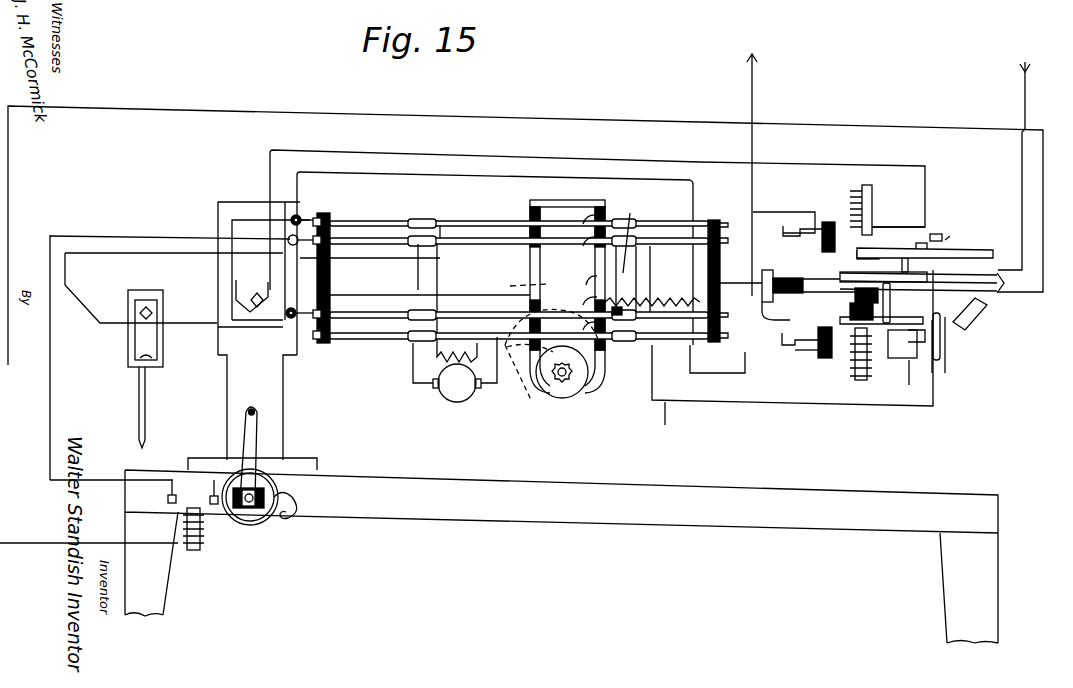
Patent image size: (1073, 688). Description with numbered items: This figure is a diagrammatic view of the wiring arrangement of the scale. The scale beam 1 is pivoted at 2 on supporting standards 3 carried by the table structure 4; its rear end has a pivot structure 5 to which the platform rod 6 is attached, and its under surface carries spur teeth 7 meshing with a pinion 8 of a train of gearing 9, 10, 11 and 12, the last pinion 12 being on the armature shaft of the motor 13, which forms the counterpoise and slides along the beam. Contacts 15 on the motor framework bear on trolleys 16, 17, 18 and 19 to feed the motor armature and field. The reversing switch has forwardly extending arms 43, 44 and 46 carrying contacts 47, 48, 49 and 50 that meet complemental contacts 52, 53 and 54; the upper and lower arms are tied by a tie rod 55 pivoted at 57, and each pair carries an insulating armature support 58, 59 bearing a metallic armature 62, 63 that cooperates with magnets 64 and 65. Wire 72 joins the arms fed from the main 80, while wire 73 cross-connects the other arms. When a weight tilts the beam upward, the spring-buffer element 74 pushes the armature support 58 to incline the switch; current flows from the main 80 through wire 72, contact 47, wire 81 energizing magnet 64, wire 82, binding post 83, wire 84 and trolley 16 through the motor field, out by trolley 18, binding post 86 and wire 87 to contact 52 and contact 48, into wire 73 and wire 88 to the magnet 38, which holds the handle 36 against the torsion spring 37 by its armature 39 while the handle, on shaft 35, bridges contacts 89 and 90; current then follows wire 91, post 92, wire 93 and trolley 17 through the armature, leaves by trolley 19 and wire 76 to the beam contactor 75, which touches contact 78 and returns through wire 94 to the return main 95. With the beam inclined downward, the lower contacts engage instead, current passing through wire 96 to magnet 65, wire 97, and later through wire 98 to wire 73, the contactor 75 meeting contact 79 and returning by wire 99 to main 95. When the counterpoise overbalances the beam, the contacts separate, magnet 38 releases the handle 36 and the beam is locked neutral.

The scale beam 1 is at (630, 233).
The pivot 2 is at (256, 292).
The supporting standards 3 is at (268, 396).
The table structure 4 is at (468, 487).
The pivot structure 5 is at (158, 311).
The platform rod 6 is at (140, 397).
The spur teeth 7 is at (643, 303).
The pinion 8 is at (606, 316).
The gear 9 is at (522, 284).
The gear 10 is at (499, 360).
The gear 11 is at (540, 395).
The pinion 12 is at (560, 385).
The motor 13 is at (578, 388).
The contacts 15 is at (586, 220).
The trolley 16 is at (408, 218).
The trolley 17 is at (362, 250).
The trolley 18 is at (362, 322).
The trolley 19 is at (390, 341).
The shaft 35 is at (254, 512).
The operating crank 36 is at (250, 439).
The torsion spring 37 is at (292, 494).
The magnet 38 is at (196, 547).
The handle armature 39 is at (233, 457).
The switch arm 43 is at (985, 253).
The switch arm 44 is at (941, 340).
The switch arm 46 is at (890, 300).
The contact 47 is at (945, 240).
The contact 48 is at (918, 277).
The contact 49 is at (906, 341).
The contact 50 is at (953, 354).
The complemental contact 52 is at (916, 247).
The complemental contact 53 is at (923, 353).
The complemental contact 54 is at (913, 382).
The tie rod 55 is at (902, 265).
The pivot 57 is at (937, 233).
The armature support 58 is at (840, 272).
The armature support 59 is at (858, 318).
The armature 62 is at (860, 256).
The armature 63 is at (850, 310).
The magnet 64 is at (873, 200).
The magnet 65 is at (855, 350).
The wire 72 is at (985, 318).
The wire 73 is at (1005, 290).
The spring-buffer element 74 is at (533, 208).
The contactor element 75 is at (766, 268).
The wire 76 is at (717, 359).
The contact 78 is at (799, 224).
The contact 79 is at (782, 341).
The main 80 is at (1028, 97).
The wire 81 is at (891, 227).
The wire 82 is at (460, 181).
The binding post 83 is at (300, 215).
The wire 84 is at (325, 216).
The binding post 86 is at (288, 318).
The wire 87 is at (270, 180).
The wire 88 is at (443, 116).
The contact 89 is at (215, 505).
The contact 90 is at (169, 504).
The wire 91 is at (50, 432).
The post 92 is at (293, 246).
The wire 93 is at (286, 238).
The wire 94 is at (792, 212).
The return main 95 is at (756, 90).
The wire 96 is at (895, 360).
The wire 97 is at (770, 373).
The wire 98 is at (663, 421).
The wire 99 is at (795, 350).